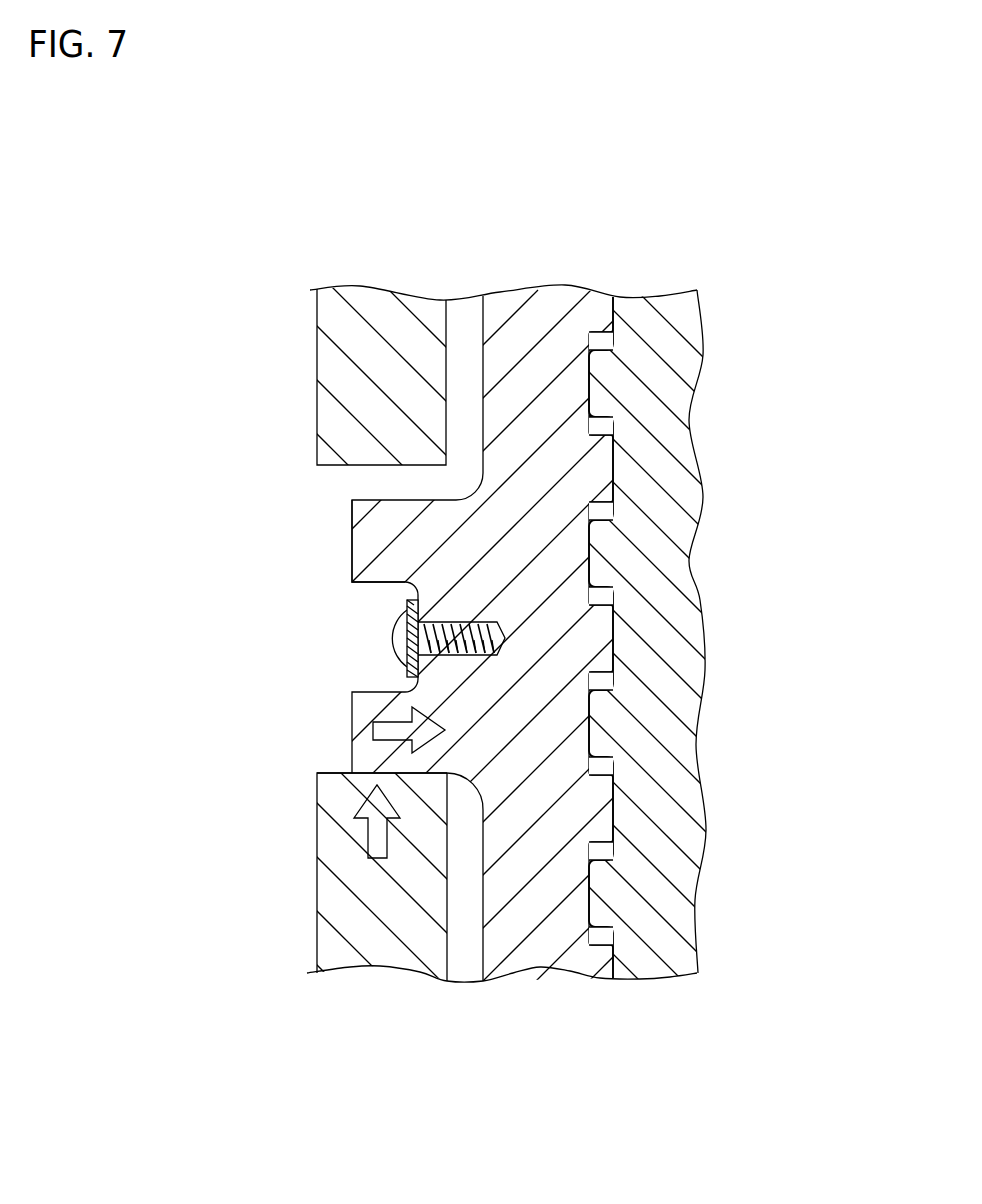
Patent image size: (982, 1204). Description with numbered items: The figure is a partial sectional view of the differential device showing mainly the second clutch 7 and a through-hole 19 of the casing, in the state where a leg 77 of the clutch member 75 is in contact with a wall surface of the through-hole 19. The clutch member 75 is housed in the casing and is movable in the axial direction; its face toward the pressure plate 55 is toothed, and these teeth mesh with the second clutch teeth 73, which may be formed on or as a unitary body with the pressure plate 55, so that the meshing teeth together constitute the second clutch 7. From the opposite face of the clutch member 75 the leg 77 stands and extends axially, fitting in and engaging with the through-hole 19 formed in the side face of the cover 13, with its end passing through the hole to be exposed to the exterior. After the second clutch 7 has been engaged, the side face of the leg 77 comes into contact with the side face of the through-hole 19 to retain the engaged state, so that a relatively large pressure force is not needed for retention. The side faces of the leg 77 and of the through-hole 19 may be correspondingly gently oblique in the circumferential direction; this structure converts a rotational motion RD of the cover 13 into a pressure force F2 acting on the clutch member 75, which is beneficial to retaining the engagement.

The second clutch 7 is at (777, 248).
The cover 13 is at (317, 879).
The through-hole 19 is at (337, 773).
The pressure plate 55 is at (650, 937).
The second clutch teeth 73 is at (584, 716).
The clutch member 75 is at (617, 636).
The leg 77 is at (350, 549).
The pressure force F2 is at (390, 720).
The rotational motion RD is at (375, 860).